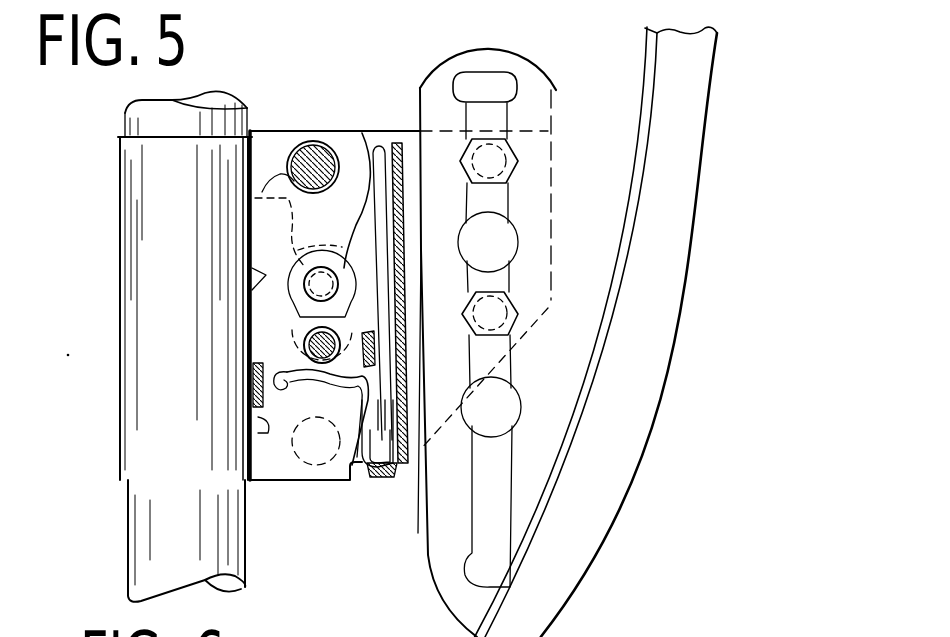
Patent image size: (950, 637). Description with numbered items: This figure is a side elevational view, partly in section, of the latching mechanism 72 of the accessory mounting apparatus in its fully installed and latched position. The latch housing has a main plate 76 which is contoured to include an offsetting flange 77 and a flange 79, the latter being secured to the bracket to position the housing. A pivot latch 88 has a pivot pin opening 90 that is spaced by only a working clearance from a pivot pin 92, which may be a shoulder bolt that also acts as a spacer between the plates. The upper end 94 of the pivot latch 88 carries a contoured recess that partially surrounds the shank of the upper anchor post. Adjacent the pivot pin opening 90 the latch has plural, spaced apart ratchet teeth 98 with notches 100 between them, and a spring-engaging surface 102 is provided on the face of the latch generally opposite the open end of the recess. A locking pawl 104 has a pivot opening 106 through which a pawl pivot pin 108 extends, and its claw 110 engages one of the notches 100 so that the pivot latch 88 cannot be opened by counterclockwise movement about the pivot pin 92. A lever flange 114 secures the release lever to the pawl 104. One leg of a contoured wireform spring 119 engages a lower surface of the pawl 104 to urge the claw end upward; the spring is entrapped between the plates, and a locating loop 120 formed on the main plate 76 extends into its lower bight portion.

The latching mechanism 72 is at (367, 269).
The main plate 76 is at (290, 145).
The offsetting flange 77 is at (418, 524).
The flange 79 is at (533, 157).
The pivot latch 88 is at (347, 143).
The pivot pin opening 90 is at (314, 272).
The pivot pin 92 is at (316, 290).
The upper end 94 is at (283, 175).
The ratchet teeth 98 is at (290, 289).
The notches 100 is at (252, 285).
The spring-engaging surface 102 is at (364, 133).
The locking pawl 104 is at (403, 363).
The pivot opening 106 is at (328, 362).
The pawl pivot pin 108 is at (337, 330).
The claw 110 is at (285, 320).
The lever flange 114 is at (373, 348).
The wireform spring 119 is at (460, 236).
The locating loop 120 is at (378, 465).